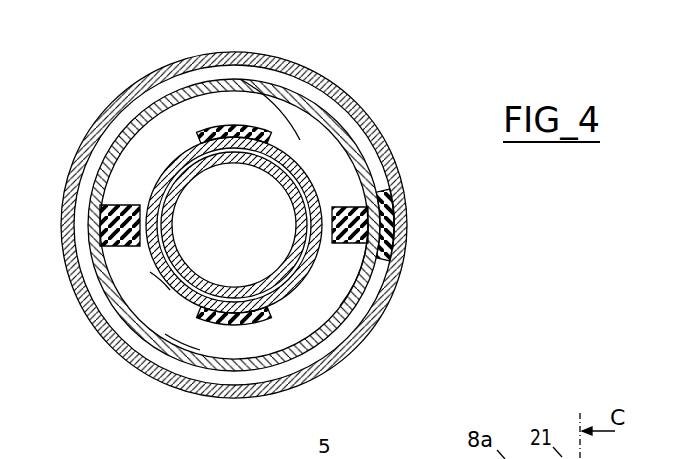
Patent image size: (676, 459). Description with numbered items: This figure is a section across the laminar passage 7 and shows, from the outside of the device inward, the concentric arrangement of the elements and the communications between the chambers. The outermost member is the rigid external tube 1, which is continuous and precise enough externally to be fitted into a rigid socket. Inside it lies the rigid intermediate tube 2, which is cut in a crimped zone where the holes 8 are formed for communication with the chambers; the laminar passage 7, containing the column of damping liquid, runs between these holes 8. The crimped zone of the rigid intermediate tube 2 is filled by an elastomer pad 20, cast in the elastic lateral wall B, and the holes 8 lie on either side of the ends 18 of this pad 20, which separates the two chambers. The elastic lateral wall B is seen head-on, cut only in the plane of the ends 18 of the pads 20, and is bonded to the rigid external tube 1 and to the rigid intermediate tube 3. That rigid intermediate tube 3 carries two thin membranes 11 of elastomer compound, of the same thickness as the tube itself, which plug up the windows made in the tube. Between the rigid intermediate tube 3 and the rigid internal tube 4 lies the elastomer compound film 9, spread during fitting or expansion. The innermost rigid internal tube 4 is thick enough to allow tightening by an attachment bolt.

The rigid external tube 1 is at (140, 85).
The rigid intermediate tube 2 is at (271, 86).
The rigid intermediate tube 3 is at (148, 277).
The rigid internal tube 4 is at (276, 163).
The laminar passage 7 is at (86, 228).
The holes 8 is at (352, 222).
The elastomer compound film 9 is at (293, 283).
The thin membranes 11 is at (220, 126).
The ends of the pad 18 is at (118, 205).
The pad 20 is at (399, 201).
The elastic lateral wall B is at (180, 341).